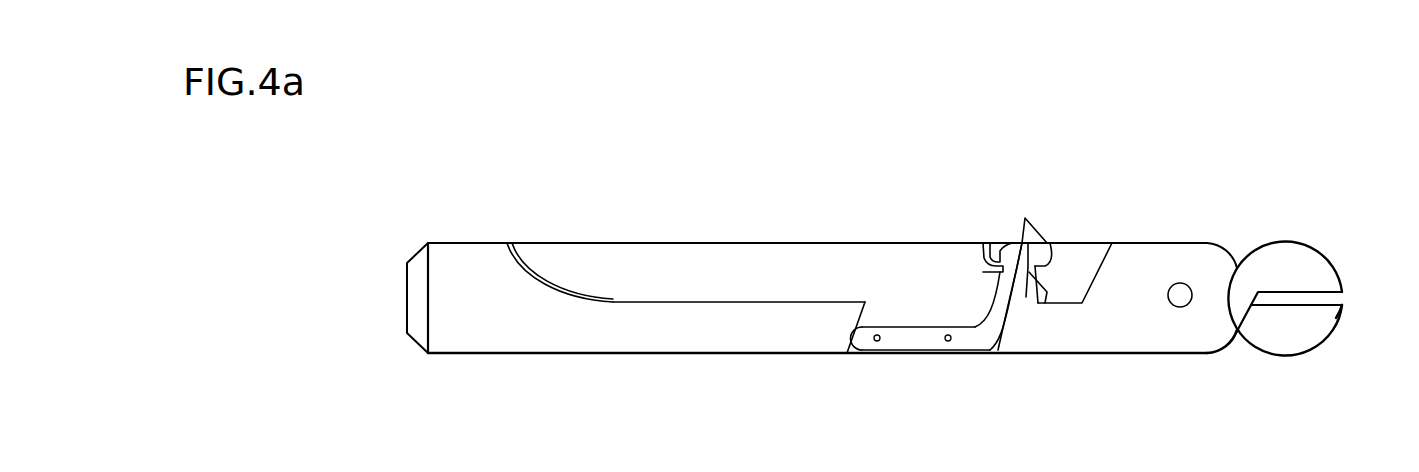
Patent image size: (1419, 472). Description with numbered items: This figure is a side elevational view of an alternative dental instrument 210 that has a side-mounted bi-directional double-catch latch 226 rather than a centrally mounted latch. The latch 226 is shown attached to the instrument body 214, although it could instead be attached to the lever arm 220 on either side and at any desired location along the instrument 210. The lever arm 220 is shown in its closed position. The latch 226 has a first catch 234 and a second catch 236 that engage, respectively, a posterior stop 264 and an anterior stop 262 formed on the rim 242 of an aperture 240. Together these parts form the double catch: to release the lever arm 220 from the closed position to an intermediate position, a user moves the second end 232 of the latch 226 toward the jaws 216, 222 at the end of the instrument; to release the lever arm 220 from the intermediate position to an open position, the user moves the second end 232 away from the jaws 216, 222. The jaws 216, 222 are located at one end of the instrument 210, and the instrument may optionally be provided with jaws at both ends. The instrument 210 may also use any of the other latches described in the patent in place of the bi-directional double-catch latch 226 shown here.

The instrument 210 is at (506, 152).
The instrument body 214 is at (580, 330).
The jaw 216 is at (1337, 272).
The lever arm 220 is at (567, 258).
The jaw 222 is at (1338, 318).
The side-mounted latch 226 is at (964, 311).
The second end 232 is at (1027, 218).
The first catch 234 is at (1003, 255).
The second catch 236 is at (1045, 250).
The aperture 240 is at (1028, 290).
The rim 242 is at (1040, 297).
The anterior stop 262 is at (1058, 262).
The posterior stop 264 is at (988, 266).